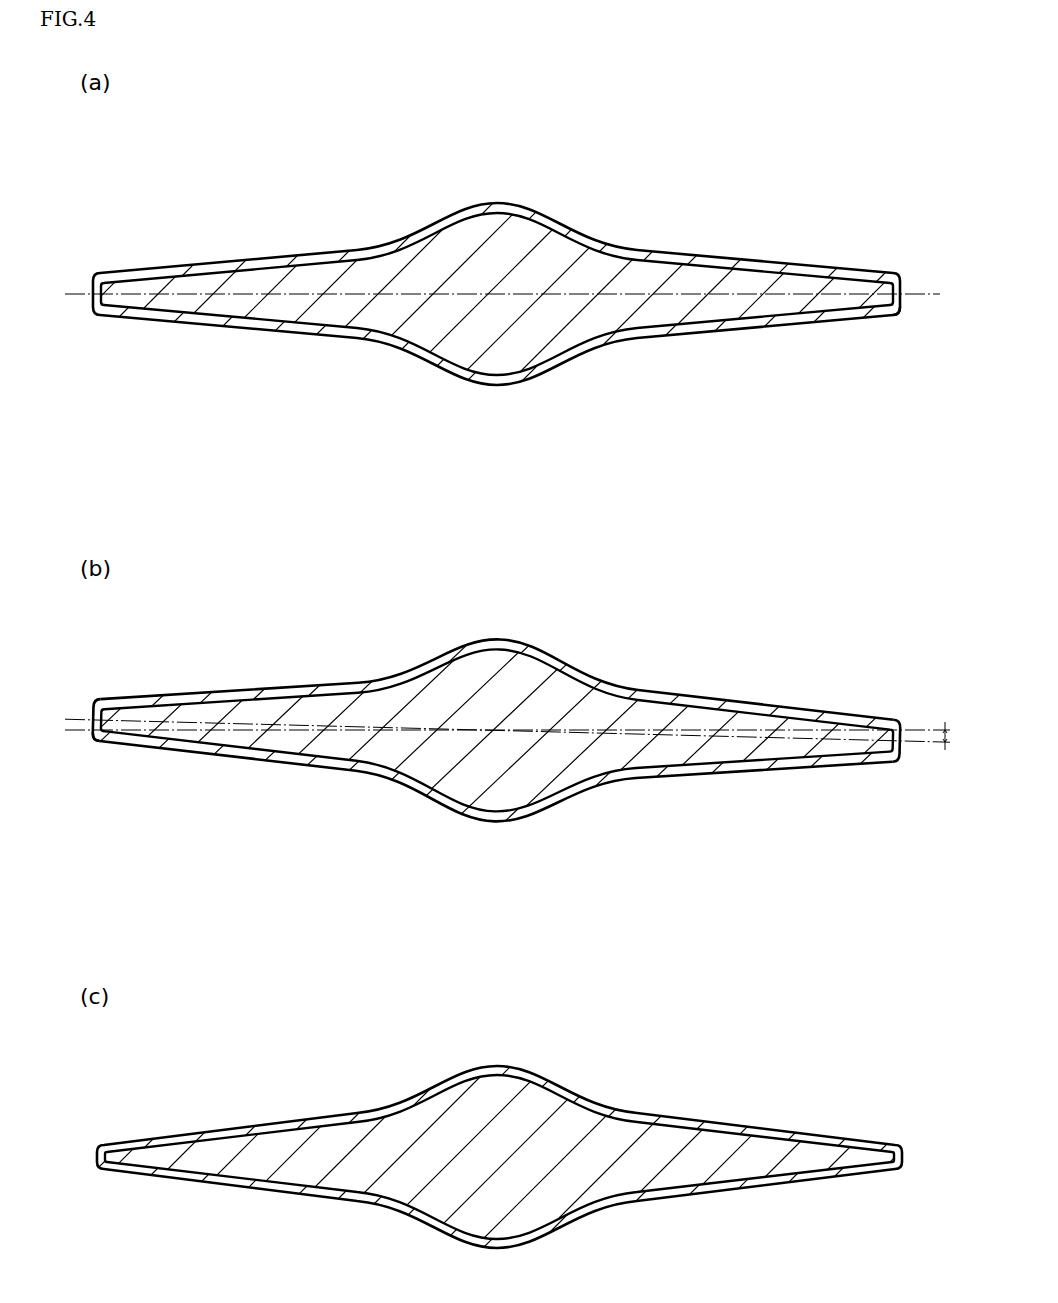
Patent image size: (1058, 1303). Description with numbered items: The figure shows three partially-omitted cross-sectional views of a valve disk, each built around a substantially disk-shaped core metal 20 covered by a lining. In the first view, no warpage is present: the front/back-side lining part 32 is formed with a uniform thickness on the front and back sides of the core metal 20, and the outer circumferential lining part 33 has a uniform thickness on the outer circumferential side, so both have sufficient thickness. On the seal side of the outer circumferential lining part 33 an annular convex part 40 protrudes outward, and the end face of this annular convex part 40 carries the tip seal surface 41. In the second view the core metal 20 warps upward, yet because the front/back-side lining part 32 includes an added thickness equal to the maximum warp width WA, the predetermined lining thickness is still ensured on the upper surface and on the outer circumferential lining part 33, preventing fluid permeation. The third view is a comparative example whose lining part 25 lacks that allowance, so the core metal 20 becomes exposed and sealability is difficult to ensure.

The core metal 20 is at (708, 287).
The lining part 25 is at (328, 1126).
The front/back-side lining part 32 is at (240, 264).
The outer circumferential lining part 33 is at (898, 318).
The annular convex part 40 is at (903, 292).
The tip seal surface 41 is at (96, 301).
The maximum warp width WA is at (935, 721).